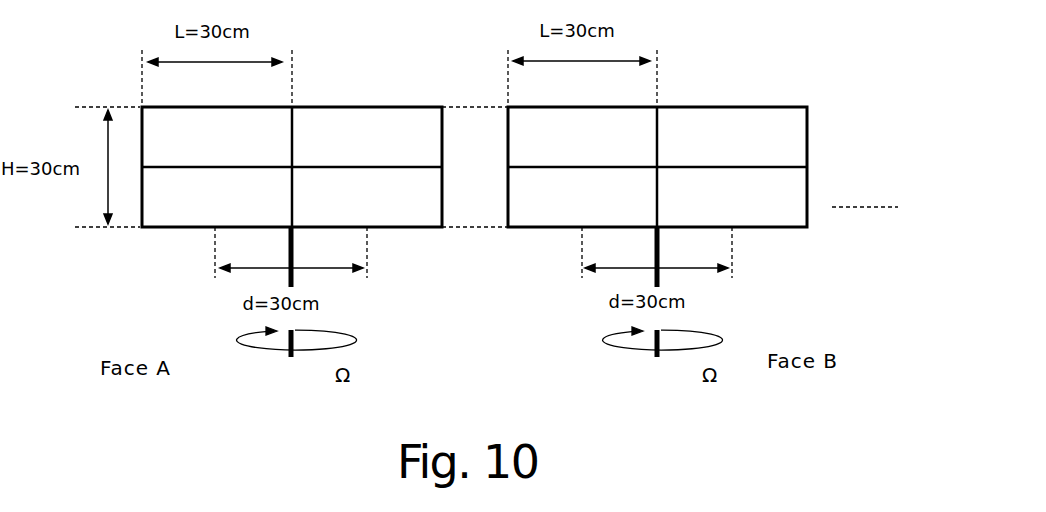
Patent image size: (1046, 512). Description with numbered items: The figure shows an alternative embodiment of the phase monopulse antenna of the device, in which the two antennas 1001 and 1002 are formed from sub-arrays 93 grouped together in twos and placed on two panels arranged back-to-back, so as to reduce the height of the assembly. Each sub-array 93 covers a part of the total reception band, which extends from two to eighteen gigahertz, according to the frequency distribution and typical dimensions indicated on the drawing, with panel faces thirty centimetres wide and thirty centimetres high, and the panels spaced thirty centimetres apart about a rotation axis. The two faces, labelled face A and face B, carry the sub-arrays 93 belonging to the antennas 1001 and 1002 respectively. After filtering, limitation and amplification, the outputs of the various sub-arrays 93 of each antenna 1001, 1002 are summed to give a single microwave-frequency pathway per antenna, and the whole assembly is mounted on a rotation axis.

The sub-array 93 is at (474, 119).
The antenna 1001 is at (446, 214).
The antenna 1002 is at (474, 216).